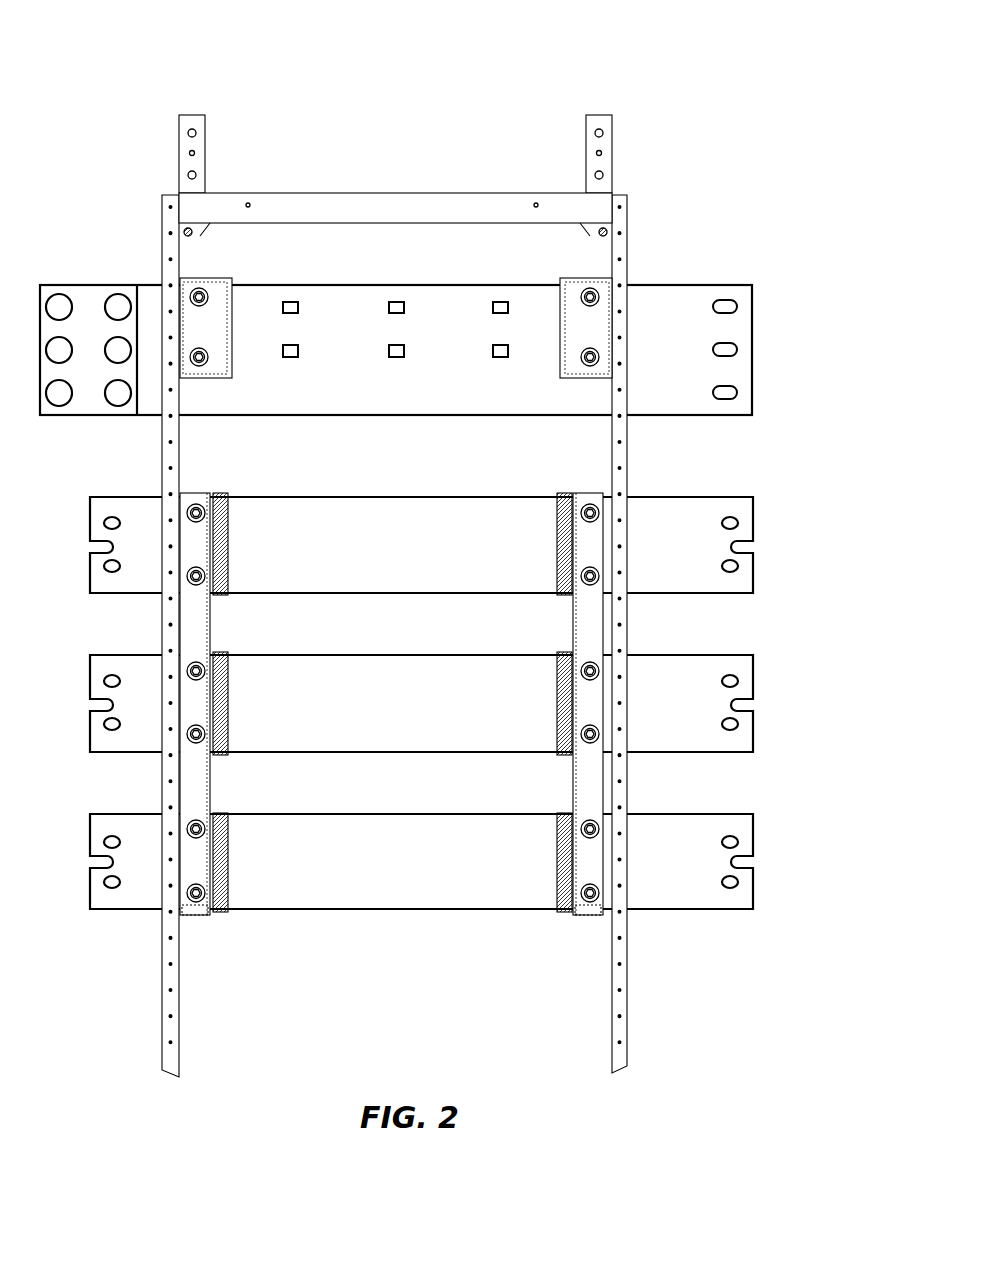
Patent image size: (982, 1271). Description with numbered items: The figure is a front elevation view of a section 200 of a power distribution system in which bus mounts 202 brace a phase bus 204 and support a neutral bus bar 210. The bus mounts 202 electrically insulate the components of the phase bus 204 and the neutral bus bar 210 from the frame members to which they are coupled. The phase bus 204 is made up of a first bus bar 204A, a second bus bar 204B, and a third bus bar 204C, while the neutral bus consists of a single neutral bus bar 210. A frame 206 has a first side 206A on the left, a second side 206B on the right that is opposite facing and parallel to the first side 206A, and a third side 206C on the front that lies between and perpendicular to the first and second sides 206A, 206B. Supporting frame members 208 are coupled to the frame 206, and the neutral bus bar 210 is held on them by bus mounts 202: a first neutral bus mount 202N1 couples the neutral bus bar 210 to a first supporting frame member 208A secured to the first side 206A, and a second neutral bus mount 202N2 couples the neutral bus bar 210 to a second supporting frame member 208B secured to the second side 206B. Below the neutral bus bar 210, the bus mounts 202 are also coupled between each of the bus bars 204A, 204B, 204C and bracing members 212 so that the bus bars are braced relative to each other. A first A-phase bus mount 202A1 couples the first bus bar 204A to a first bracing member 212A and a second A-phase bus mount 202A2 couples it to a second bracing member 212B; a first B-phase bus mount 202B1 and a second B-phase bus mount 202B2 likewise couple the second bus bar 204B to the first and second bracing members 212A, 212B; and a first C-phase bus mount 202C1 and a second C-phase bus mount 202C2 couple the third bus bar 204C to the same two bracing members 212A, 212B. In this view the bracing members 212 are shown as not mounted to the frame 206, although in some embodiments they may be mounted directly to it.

The section 200 is at (451, 543).
The bus mounts 202 is at (396, 572).
The first neutral bus mount 202N1 is at (232, 279).
The second neutral bus mount 202N2 is at (560, 279).
The first A-phase bus mount 202A1 is at (230, 495).
The second A-phase bus mount 202A2 is at (558, 495).
The first B-phase bus mount 202B1 is at (230, 653).
The second B-phase bus mount 202B2 is at (558, 653).
The first C-phase bus mount 202C1 is at (230, 813).
The second C-phase bus mount 202C2 is at (558, 813).
The phase bus 204 is at (476, 664).
The first bus bar 204A is at (753, 503).
The second bus bar 204B is at (753, 661).
The third bus bar 204C is at (753, 821).
The frame 206 is at (396, 170).
The first side 206A is at (166, 197).
The second side 206B is at (628, 200).
The third side 206C is at (350, 193).
The supporting frame members 208 is at (383, 636).
The first supporting frame member 208A is at (178, 258).
The second supporting frame member 208B is at (628, 265).
The neutral bus bar 210 is at (752, 292).
The bracing members 212 is at (391, 950).
The first bracing member 212A is at (198, 917).
The second bracing member 212B is at (590, 917).